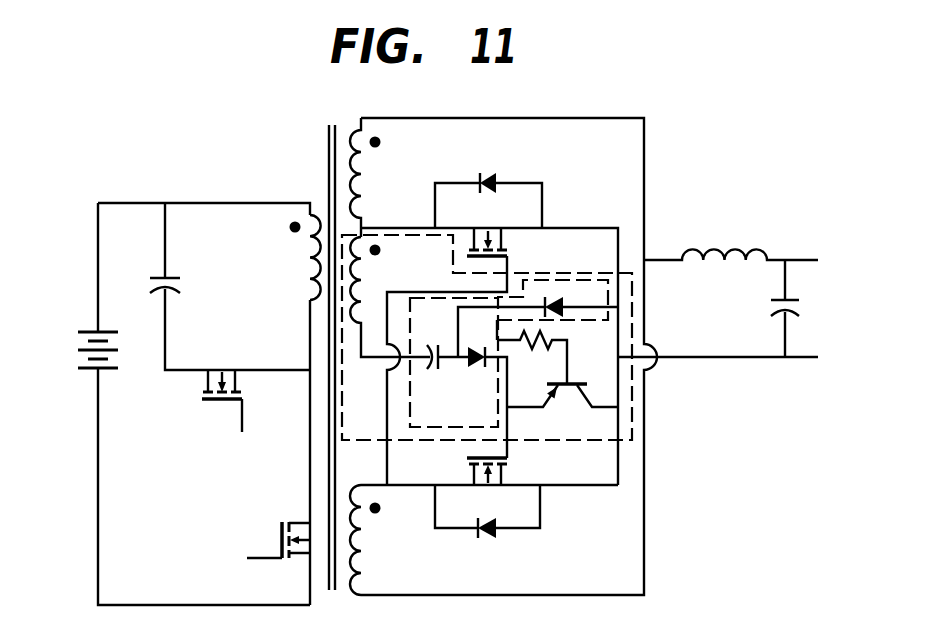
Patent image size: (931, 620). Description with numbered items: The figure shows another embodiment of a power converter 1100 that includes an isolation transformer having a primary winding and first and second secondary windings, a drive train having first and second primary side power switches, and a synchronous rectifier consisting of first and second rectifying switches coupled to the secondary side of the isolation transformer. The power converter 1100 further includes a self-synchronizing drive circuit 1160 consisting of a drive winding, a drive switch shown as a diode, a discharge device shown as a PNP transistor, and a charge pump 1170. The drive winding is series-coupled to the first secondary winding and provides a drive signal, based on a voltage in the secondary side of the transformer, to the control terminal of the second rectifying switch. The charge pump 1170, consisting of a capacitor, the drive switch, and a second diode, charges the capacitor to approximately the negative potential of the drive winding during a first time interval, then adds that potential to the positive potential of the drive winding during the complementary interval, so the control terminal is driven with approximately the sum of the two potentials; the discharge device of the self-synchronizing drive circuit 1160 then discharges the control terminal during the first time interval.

The power converter 1100 is at (256, 138).
The self-synchronizing drive circuit 1160 is at (632, 423).
The charge pump 1170 is at (586, 278).